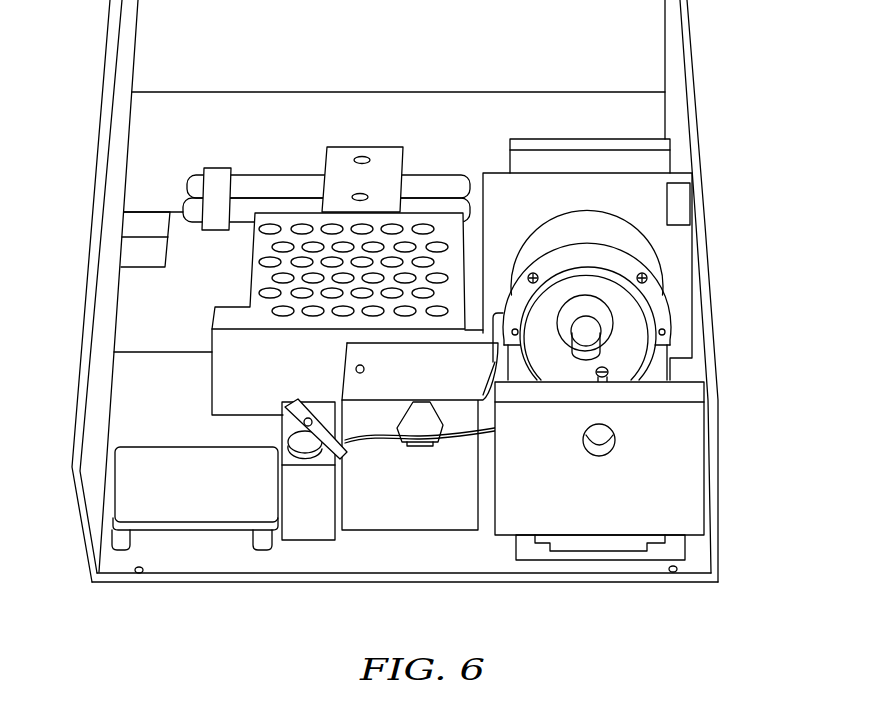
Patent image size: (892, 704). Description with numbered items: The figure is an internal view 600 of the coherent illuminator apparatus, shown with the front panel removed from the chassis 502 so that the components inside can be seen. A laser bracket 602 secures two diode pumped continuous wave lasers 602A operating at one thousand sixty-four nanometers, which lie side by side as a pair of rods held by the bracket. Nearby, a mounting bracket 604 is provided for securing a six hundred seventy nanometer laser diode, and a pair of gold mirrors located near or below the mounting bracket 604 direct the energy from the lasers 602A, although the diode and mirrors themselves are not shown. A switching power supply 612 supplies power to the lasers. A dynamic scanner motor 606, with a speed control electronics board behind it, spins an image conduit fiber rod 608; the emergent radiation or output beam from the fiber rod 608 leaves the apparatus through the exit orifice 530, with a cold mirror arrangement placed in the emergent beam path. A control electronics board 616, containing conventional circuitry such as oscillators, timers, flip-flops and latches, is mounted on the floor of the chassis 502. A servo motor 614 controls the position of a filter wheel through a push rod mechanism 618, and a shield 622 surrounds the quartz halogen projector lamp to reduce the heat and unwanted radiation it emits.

The chassis 502 is at (73, 430).
The exit orifice 530 is at (608, 447).
The internal view 600 is at (742, 301).
The laser bracket 602 is at (387, 153).
The diode pumped continuous wave lasers 602A is at (457, 207).
The mounting bracket 604 is at (648, 163).
The dynamic scanner motor 606 is at (598, 257).
The image conduit fiber rod 608 is at (587, 320).
The switching power supply 612 is at (288, 235).
The servo motor 614 is at (307, 510).
The control electronics board 616 is at (175, 532).
The push rod mechanism 618 is at (450, 442).
The shield 622 is at (380, 477).